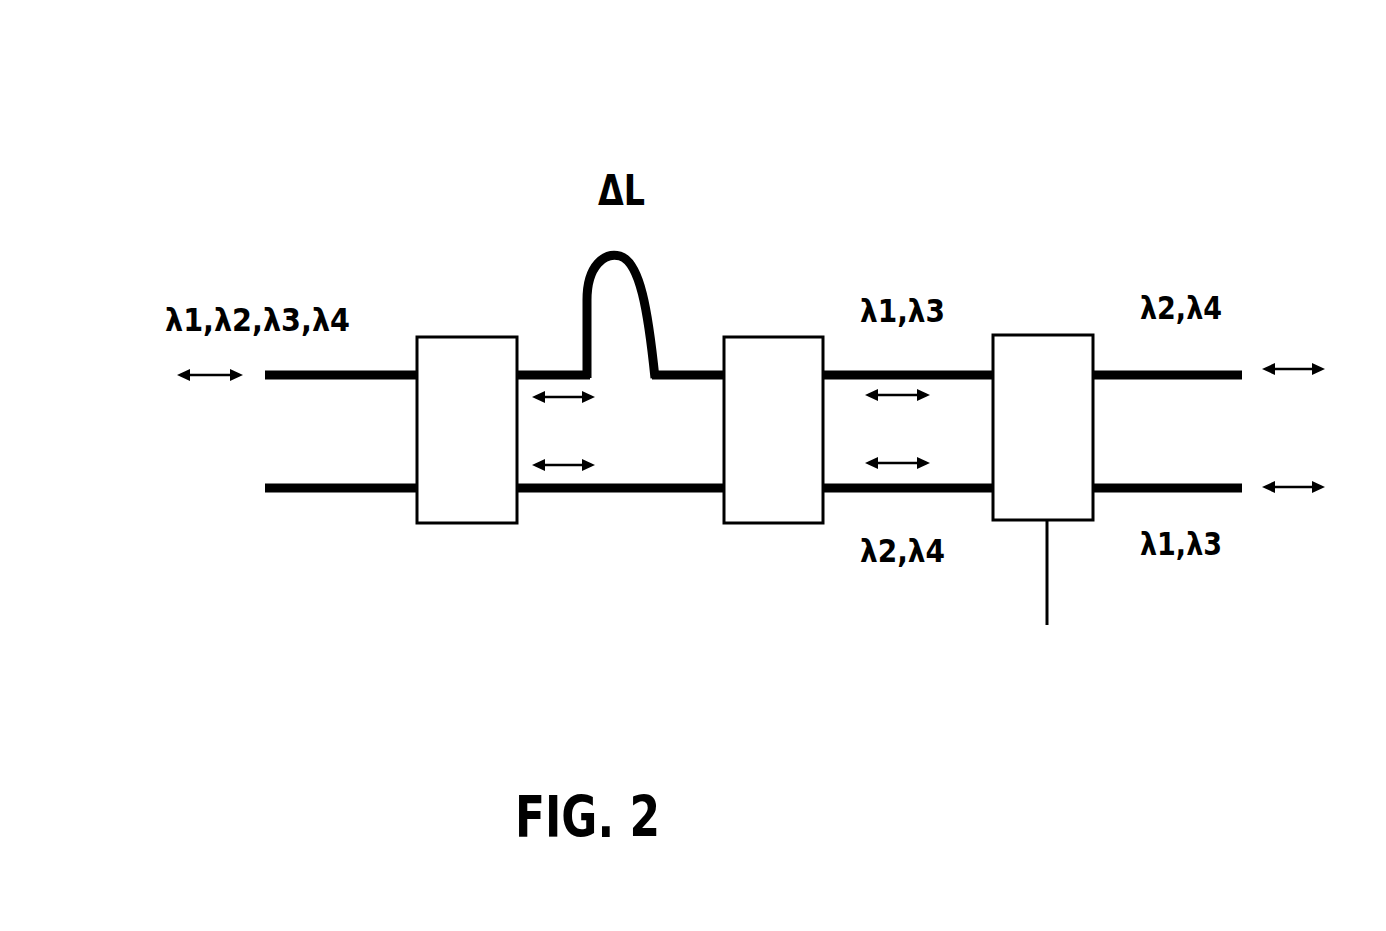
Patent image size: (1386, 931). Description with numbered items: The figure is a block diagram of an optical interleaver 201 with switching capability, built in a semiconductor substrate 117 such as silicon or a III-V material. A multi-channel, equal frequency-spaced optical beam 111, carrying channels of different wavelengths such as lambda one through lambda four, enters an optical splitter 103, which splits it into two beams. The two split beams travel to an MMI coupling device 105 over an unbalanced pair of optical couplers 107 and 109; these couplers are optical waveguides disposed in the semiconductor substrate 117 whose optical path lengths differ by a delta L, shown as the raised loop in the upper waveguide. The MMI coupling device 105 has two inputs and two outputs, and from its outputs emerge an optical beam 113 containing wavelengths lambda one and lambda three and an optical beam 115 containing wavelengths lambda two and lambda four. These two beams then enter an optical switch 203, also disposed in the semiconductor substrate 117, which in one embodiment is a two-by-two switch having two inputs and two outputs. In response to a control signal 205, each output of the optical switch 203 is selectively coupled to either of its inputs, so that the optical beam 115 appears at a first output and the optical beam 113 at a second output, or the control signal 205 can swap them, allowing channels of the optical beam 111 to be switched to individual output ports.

The optical splitter 103 is at (457, 523).
The MMI coupling device 105 is at (752, 523).
The optical coupler 107 is at (567, 493).
The optical coupler 109 is at (636, 266).
The optical beam 111 is at (203, 377).
The optical beam 113 is at (905, 399).
The optical beam 115 is at (900, 461).
The semiconductor substrate 117 is at (340, 209).
The optical interleaver 201 is at (1132, 152).
The optical switch 203 is at (1052, 335).
The control signal 205 is at (1058, 672).